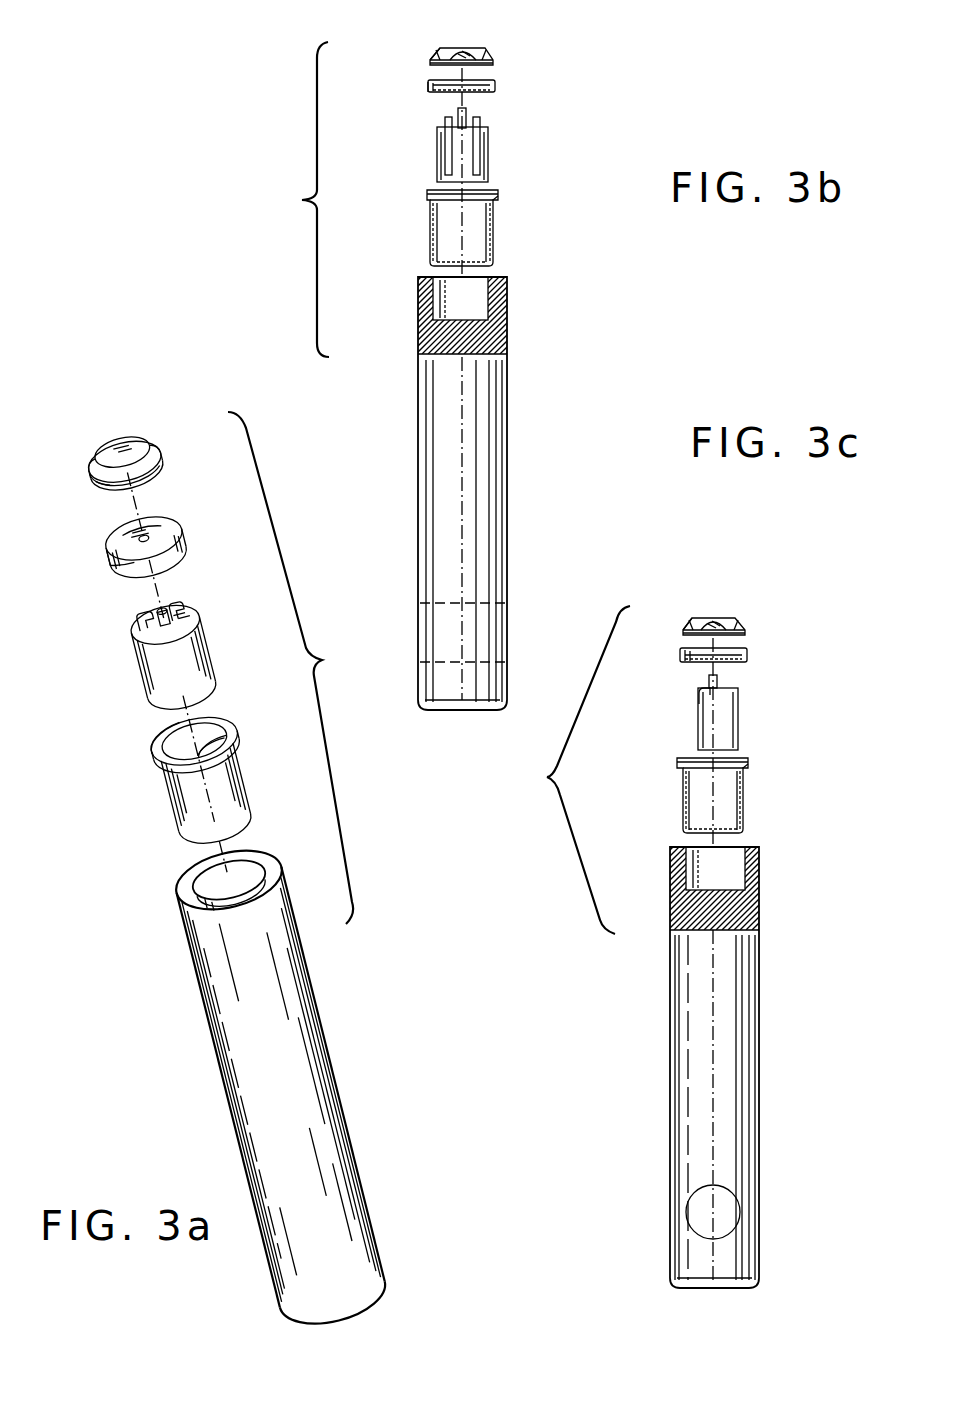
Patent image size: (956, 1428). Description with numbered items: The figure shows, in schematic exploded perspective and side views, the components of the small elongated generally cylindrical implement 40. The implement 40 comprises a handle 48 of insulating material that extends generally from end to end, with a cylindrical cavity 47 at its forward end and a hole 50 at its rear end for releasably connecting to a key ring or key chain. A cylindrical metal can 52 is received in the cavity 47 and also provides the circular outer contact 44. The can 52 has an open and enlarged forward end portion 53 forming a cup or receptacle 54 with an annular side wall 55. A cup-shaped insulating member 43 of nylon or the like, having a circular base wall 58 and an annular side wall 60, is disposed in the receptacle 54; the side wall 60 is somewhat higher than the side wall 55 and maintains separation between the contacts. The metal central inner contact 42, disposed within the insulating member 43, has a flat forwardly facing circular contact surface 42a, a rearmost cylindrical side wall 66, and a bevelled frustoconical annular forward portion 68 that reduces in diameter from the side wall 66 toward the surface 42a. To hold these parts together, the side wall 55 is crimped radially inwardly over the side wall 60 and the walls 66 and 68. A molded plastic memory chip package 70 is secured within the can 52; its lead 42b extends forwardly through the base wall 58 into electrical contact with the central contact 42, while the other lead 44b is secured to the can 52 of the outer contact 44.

In FIG. 3A, the implement 40 is at (155, 935).
In FIG. 3B, the implement 40 is at (421, 222).
In FIG. 3C, the implement 40 is at (676, 792).
In FIG. 3A, the central inner contact 42 is at (150, 450).
In FIG. 3B, the central inner contact 42 is at (494, 58).
In FIG. 3C, the central inner contact 42 is at (747, 629).
In FIG. 3A, the contact surface 42a is at (124, 452).
In FIG. 3B, the contact surface 42a is at (480, 50).
In FIG. 3C, the contact surface 42a is at (733, 617).
In FIG. 3A, the lead 42b is at (172, 612).
In FIG. 3B, the lead 42b is at (467, 112).
In FIG. 3C, the lead 42b is at (718, 682).
In FIG. 3A, the insulating member 43 is at (168, 540).
In FIG. 3B, the insulating member 43 is at (495, 86).
In FIG. 3C, the insulating member 43 is at (750, 656).
In FIG. 3A, the outer contact 44 is at (222, 716).
In FIG. 3B, the outer contact 44 is at (500, 203).
In FIG. 3C, the outer contact 44 is at (750, 760).
In FIG. 3A, the lead 44b is at (138, 628).
In FIG. 3B, the lead 44b is at (440, 132).
In FIG. 3C, the lead 44b is at (698, 700).
In FIG. 3A, the cavity 47 is at (240, 880).
In FIG. 3B, the cavity 47 is at (488, 296).
In FIG. 3C, the cavity 47 is at (745, 870).
In FIG. 3A, the handle 48 is at (320, 1115).
In FIG. 3B, the handle 48 is at (498, 430).
In FIG. 3C, the handle 48 is at (730, 1042).
In FIG. 3B, the hole 50 is at (470, 600).
In FIG. 3C, the hole 50 is at (740, 1205).
In FIG. 3A, the can 52 is at (245, 784).
In FIG. 3B, the can 52 is at (494, 246).
In FIG. 3C, the can 52 is at (745, 832).
In FIG. 3A, the forward end portion 53 is at (168, 785).
In FIG. 3B, the forward end portion 53 is at (432, 203).
In FIG. 3C, the forward end portion 53 is at (683, 768).
In FIG. 3A, the receptacle 54 is at (156, 745).
In FIG. 3B, the receptacle 54 is at (436, 192).
In FIG. 3C, the receptacle 54 is at (687, 758).
In FIG. 3A, the annular side wall 55 is at (236, 738).
In FIG. 3B, the annular side wall 55 is at (497, 193).
In FIG. 3C, the annular side wall 55 is at (748, 766).
In FIG. 3A, the base wall 58 is at (158, 535).
In FIG. 3B, the base wall 58 is at (435, 93).
In FIG. 3C, the base wall 58 is at (745, 663).
In FIG. 3A, the side wall 60 is at (110, 556).
In FIG. 3B, the side wall 60 is at (433, 80).
In FIG. 3C, the side wall 60 is at (681, 655).
In FIG. 3A, the cylindrical side wall 66 is at (98, 478).
In FIG. 3B, the cylindrical side wall 66 is at (440, 50).
In FIG. 3C, the cylindrical side wall 66 is at (683, 628).
In FIG. 3A, the frustoconical annular forward portion 68 is at (90, 467).
In FIG. 3B, the frustoconical annular forward portion 68 is at (435, 58).
In FIG. 3C, the frustoconical annular forward portion 68 is at (694, 614).
In FIG. 3A, the memory chip package 70 is at (208, 650).
In FIG. 3B, the memory chip package 70 is at (488, 160).
In FIG. 3C, the memory chip package 70 is at (737, 730).